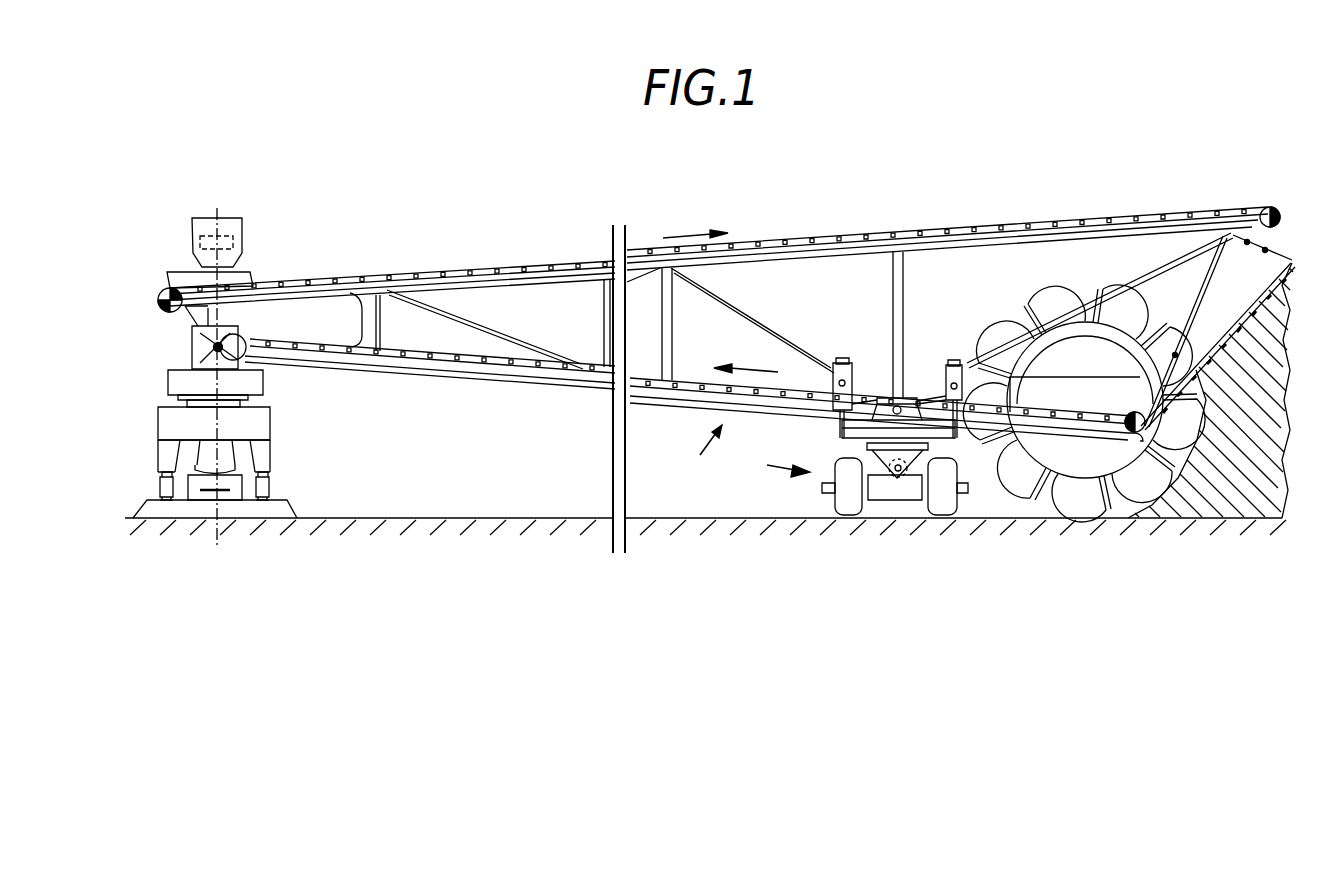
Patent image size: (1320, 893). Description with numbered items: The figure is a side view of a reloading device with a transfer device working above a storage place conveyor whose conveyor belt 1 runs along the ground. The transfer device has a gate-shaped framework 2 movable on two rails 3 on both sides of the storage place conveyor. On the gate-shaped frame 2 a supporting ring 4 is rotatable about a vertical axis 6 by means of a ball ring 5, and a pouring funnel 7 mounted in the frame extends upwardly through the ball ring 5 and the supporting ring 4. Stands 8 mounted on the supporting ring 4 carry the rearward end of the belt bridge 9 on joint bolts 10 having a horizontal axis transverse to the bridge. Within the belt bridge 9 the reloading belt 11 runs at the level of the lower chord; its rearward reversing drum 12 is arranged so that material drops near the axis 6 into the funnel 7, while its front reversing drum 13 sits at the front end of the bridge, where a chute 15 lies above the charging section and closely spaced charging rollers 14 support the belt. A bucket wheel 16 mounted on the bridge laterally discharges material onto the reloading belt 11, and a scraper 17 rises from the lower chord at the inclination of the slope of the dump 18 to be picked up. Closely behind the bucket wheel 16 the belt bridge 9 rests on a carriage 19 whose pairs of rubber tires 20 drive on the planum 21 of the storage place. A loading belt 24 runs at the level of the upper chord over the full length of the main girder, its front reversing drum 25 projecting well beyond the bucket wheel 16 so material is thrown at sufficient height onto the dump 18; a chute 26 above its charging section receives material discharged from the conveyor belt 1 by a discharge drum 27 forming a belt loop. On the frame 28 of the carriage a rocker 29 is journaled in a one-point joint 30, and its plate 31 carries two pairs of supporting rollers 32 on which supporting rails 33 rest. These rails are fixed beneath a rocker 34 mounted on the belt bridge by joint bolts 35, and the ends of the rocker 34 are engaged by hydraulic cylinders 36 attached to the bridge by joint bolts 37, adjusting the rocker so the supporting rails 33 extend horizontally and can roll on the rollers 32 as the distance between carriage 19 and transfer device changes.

The conveyor belt 1 is at (233, 503).
The gate-shaped framework 2 is at (260, 425).
The rails 3 is at (268, 496).
The supporting ring 4 is at (258, 385).
The ball ring 5 is at (248, 405).
The vertical axis 6 is at (210, 380).
The pouring funnel 7 is at (210, 447).
The stands 8 is at (205, 360).
The belt bridge 9 is at (696, 460).
The joint bolts 10 is at (232, 344).
The reloading belt 11 is at (686, 380).
The rearward reversing drum 12 is at (243, 350).
The front reversing drum 13 is at (1129, 412).
The charging rollers 14 is at (1045, 400).
The chute 15 is at (1085, 398).
The bucket wheel 16 is at (1040, 305).
The scraper 17 is at (1242, 318).
The dump 18 is at (1248, 482).
The carriage 19 is at (771, 461).
The rubber tires 20 is at (846, 502).
The planum 21 is at (738, 519).
The loading belt 24 is at (770, 242).
The front reversing drum 25 is at (1277, 213).
The chute 26 is at (250, 276).
The discharge drum 27 is at (240, 226).
The frame 28 is at (915, 495).
The rocker 29 is at (896, 478).
The one-point joint 30 is at (908, 492).
The plate 31 is at (946, 502).
The supporting rollers 32 is at (875, 441).
The supporting rails 33 is at (925, 396).
The rocker 34 is at (880, 397).
The joint bolts 35 is at (906, 392).
The cylinders 36 is at (850, 360).
The joint bolts 37 is at (843, 362).